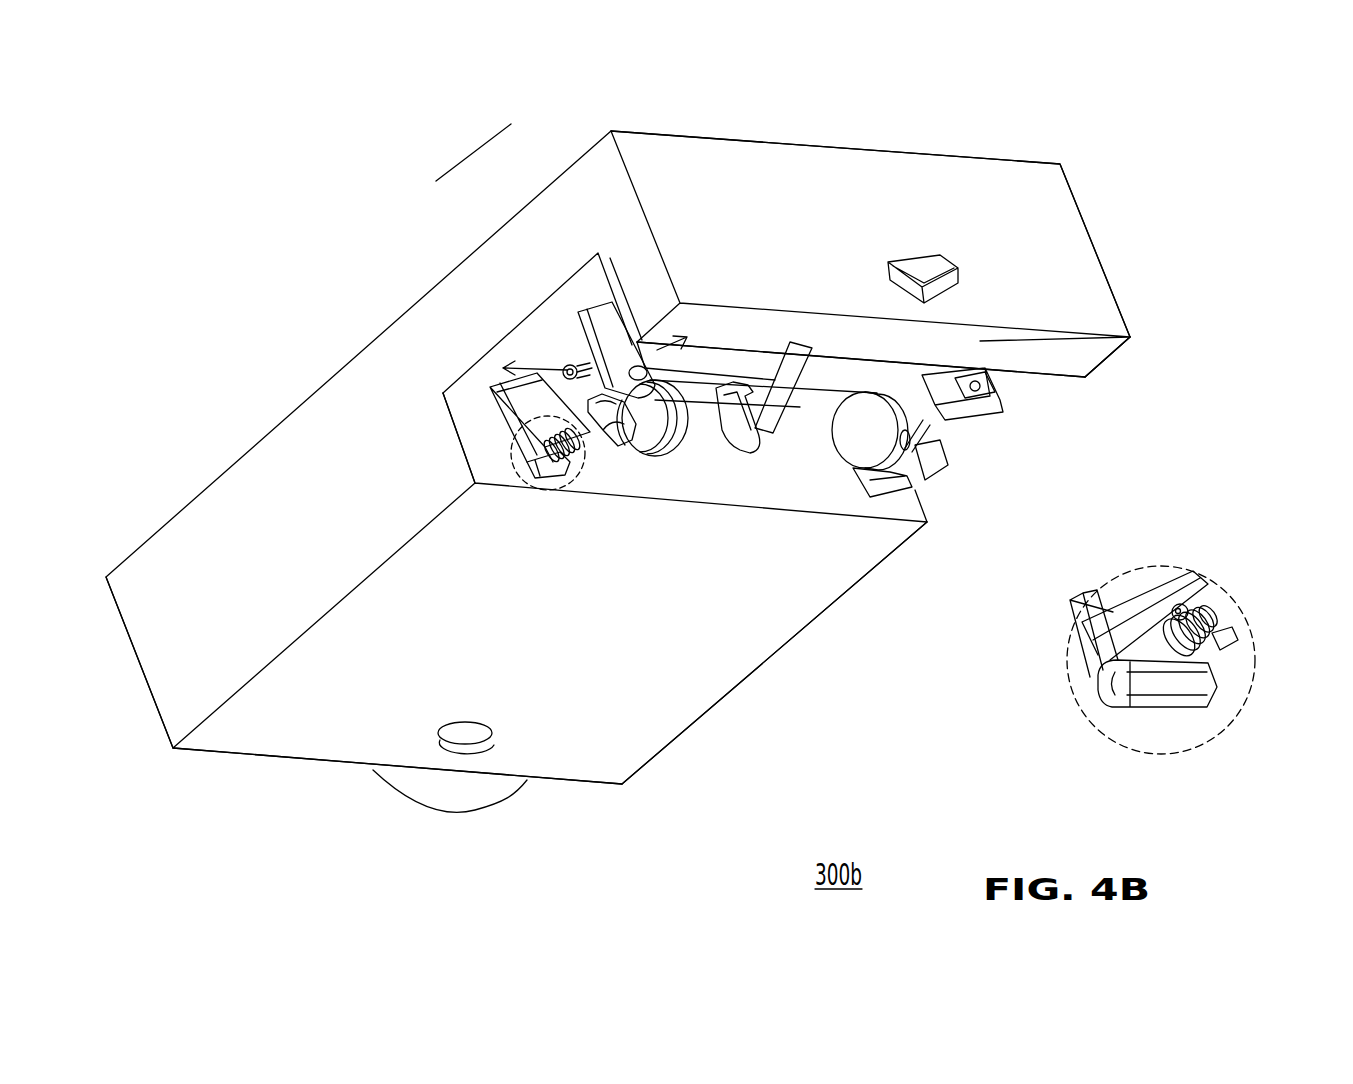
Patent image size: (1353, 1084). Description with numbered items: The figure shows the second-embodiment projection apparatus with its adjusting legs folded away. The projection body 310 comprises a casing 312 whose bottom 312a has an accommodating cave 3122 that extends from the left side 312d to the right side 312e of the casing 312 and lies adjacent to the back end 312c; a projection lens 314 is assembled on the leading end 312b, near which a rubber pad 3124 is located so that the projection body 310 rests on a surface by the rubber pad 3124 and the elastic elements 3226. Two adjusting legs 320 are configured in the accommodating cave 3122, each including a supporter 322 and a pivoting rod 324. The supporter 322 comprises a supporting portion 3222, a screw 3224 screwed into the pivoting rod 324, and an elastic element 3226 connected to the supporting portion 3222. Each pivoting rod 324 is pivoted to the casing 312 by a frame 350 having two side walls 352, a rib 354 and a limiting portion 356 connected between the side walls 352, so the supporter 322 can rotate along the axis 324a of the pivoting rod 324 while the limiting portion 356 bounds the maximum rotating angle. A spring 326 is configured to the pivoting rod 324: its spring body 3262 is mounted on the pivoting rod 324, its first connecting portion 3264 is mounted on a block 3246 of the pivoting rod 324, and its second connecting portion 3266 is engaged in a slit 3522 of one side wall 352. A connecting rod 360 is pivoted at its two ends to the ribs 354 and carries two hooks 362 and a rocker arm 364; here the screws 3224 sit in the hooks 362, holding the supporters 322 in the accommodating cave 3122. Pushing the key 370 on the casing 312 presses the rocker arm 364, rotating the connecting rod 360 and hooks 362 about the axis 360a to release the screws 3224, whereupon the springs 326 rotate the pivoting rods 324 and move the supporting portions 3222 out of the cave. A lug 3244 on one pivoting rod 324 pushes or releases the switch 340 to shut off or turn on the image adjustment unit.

The projection body 310 is at (618, 529).
The casing 312 is at (557, 772).
The projection lens 314 is at (490, 812).
The accommodating cave 3122 is at (451, 461).
The rubber pad 3124 is at (462, 744).
The bottom 312a is at (709, 672).
The leading end 312b is at (263, 771).
The back end 312c is at (1057, 227).
The left side 312d is at (258, 487).
The right side 312e is at (850, 601).
The adjusting leg 320 is at (1010, 485).
The supporter 322 is at (981, 475).
The supporting portion 3222 is at (937, 442).
The screw 3224 is at (953, 427).
The elastic element 3226 is at (930, 473).
The pivoting rod 324 is at (1045, 485).
The axis 324a is at (627, 312).
The lug 3244 is at (982, 395).
The block 3246 is at (1167, 607).
The spring 326 is at (1200, 712).
The spring body 3262 is at (1217, 695).
The first connecting portion 3264 is at (1242, 630).
The second connecting portion 3266 is at (1157, 703).
The switch 340 is at (1128, 336).
The frame 350 is at (809, 397).
The side wall 352 is at (608, 320).
The slit 3522 is at (1068, 698).
The rib 354 is at (548, 335).
The limiting portion 356 is at (557, 414).
The connecting rod 360 is at (644, 266).
The axis 360a is at (538, 352).
The hook 362 is at (630, 450).
The rocker arm 364 is at (773, 355).
The key 370 is at (930, 274).